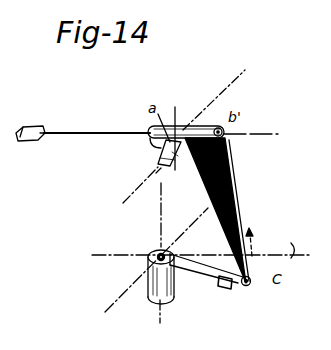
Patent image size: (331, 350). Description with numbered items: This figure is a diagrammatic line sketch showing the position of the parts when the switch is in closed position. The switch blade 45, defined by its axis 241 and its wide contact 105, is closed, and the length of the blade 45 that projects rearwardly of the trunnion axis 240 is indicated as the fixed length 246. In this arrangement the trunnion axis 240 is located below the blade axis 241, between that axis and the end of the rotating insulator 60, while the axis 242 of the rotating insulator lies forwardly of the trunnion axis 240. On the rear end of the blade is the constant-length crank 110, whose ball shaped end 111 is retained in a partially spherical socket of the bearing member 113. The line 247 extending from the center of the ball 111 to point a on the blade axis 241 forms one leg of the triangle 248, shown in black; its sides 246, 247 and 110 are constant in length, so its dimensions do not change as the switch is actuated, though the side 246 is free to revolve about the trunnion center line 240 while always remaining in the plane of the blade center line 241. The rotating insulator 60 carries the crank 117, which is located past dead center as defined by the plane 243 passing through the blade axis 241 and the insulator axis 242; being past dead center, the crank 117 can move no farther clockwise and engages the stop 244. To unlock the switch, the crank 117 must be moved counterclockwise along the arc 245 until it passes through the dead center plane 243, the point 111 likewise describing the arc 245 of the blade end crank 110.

The wide contact 105 is at (40, 126).
The blade 45 is at (85, 132).
The fixed length of the blade 246 is at (191, 105).
The blade axis 241 is at (244, 134).
The trunnion axis 240 is at (218, 92).
The line from ball center to point a 247 is at (206, 198).
The crank 110 is at (226, 160).
The triangle 248 is at (234, 176).
The axis of the rotating insulator 242 is at (162, 210).
The arc 245 is at (243, 222).
The dead center plane 243 is at (280, 248).
The ball shaped end 111 is at (262, 275).
The bearing member 113 is at (251, 283).
The crank arm of the rotating insulator 117 is at (207, 278).
The stop 244 is at (225, 288).
The rotating insulator 60 is at (150, 297).